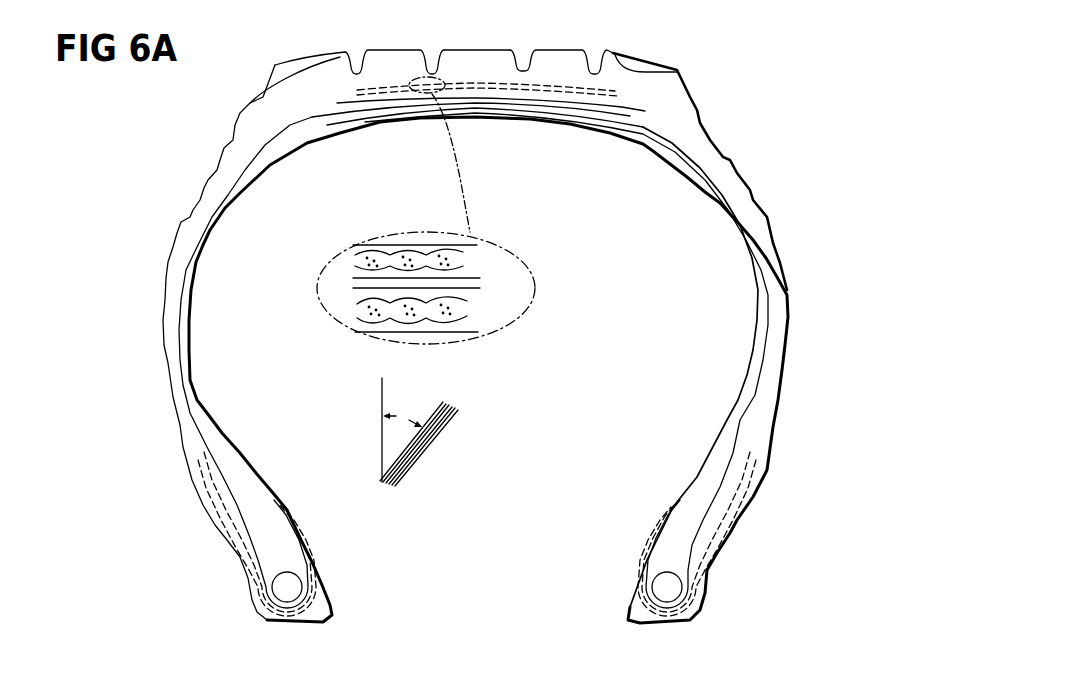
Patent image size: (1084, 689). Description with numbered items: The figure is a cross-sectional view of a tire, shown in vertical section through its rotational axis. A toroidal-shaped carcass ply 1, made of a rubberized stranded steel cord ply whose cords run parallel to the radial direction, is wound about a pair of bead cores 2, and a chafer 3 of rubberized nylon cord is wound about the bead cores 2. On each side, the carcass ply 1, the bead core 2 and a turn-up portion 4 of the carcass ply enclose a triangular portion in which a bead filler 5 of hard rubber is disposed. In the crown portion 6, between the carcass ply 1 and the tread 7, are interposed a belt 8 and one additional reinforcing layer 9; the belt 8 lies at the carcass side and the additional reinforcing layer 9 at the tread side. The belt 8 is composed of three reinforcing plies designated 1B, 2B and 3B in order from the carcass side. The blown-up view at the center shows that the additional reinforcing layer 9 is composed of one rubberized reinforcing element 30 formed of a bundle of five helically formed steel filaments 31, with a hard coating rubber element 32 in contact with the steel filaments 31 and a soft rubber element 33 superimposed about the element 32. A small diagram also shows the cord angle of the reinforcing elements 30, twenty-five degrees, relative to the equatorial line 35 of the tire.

The carcass ply 1 is at (708, 172).
The bead core 2 is at (690, 604).
The chafer 3 is at (730, 515).
The turn-up portion 4 is at (693, 562).
The bead filler 5 is at (730, 467).
The crown portion 6 is at (566, 62).
The tread 7 is at (473, 68).
The belt 8 is at (461, 141).
The additional reinforcing layer 9 is at (387, 88).
The first reinforcing ply 1B is at (560, 120).
The second reinforcing ply 2B is at (597, 120).
The third reinforcing ply 3B is at (618, 104).
The reinforcing element 30 is at (403, 359).
The steel filament 31 is at (458, 259).
The coating rubber (hard rubber element) 32 is at (428, 256).
The soft rubber element 33 is at (362, 249).
The equatorial line 35 is at (380, 393).